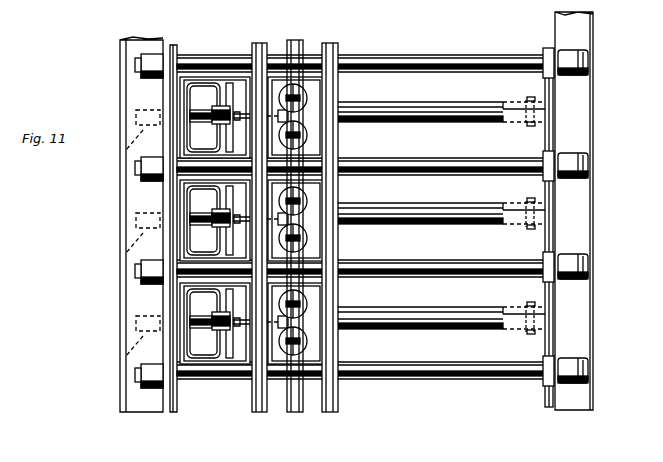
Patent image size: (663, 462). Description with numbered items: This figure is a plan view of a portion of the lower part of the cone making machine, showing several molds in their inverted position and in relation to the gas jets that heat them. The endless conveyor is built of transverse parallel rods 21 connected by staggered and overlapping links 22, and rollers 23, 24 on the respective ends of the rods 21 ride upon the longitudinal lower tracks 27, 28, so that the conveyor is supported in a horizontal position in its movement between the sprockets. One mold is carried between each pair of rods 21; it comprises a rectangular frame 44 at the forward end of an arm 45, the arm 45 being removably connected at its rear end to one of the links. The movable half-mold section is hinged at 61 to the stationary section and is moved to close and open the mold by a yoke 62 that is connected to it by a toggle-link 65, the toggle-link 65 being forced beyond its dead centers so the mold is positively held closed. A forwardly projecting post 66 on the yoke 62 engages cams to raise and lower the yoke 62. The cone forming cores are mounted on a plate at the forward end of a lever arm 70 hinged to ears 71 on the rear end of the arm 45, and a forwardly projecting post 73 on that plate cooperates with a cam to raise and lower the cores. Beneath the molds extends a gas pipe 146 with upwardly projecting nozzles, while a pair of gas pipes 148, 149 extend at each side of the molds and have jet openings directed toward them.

The transverse parallel rods 21 is at (436, 58).
The links 22 is at (552, 93).
The rollers 23 is at (145, 65).
The rollers 24 is at (572, 62).
The track 27 is at (133, 97).
The track 28 is at (575, 122).
The rectangular frame 44 is at (225, 155).
The arm 45 is at (384, 105).
The hinge 61 is at (302, 110).
The yoke 62 is at (222, 99).
The toggle-link 65 is at (236, 112).
The forwardly projecting post 66 is at (200, 124).
The lever arm 70 is at (422, 110).
The ears 71 is at (528, 98).
The forwardly projecting post 73 is at (124, 152).
The gas pipe 146 is at (295, 42).
The gas pipe 148 is at (252, 50).
The gas pipe 149 is at (338, 50).